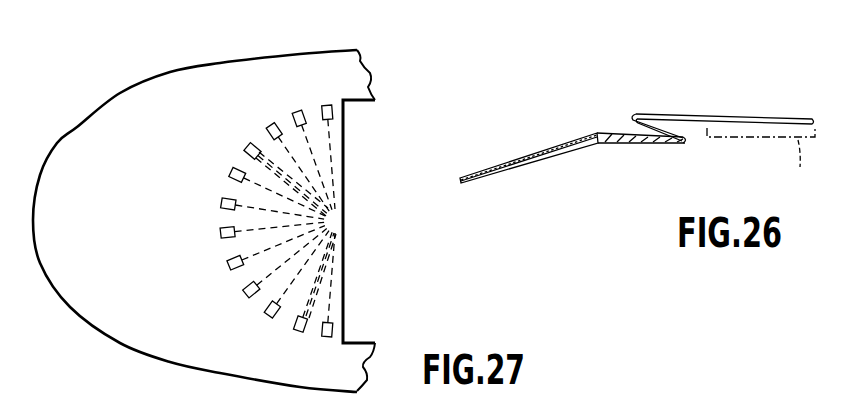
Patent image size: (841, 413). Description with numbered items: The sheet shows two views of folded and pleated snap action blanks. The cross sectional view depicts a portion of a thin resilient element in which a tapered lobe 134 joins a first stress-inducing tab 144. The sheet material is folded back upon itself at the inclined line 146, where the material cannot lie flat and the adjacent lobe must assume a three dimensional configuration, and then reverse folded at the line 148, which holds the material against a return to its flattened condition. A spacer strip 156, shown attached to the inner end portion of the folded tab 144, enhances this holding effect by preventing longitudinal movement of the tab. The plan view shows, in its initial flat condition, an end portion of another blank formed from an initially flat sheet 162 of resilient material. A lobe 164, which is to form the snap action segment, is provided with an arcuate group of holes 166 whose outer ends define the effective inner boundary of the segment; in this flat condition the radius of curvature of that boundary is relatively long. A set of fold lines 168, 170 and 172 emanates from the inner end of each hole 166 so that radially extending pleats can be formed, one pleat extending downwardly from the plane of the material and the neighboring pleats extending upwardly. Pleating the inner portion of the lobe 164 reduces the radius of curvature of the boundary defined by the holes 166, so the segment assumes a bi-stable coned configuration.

In FIG. 27, the flat sheet 162 is at (323, 68).
In FIG. 27, the lobe 164 is at (65, 151).
In FIG. 27, the holes 166 is at (268, 123).
In FIG. 27, the fold line 168 is at (311, 313).
In FIG. 27, the fold line 170 is at (310, 297).
In FIG. 27, the fold line 172 is at (294, 320).
In FIG. 26, the tapered lobe 134 is at (517, 160).
In FIG. 26, the first stress-inducing tab 144 is at (773, 118).
In FIG. 26, the fold line 146 is at (684, 141).
In FIG. 26, the fold line 148 is at (634, 116).
In FIG. 26, the spacer strip 156 is at (802, 167).